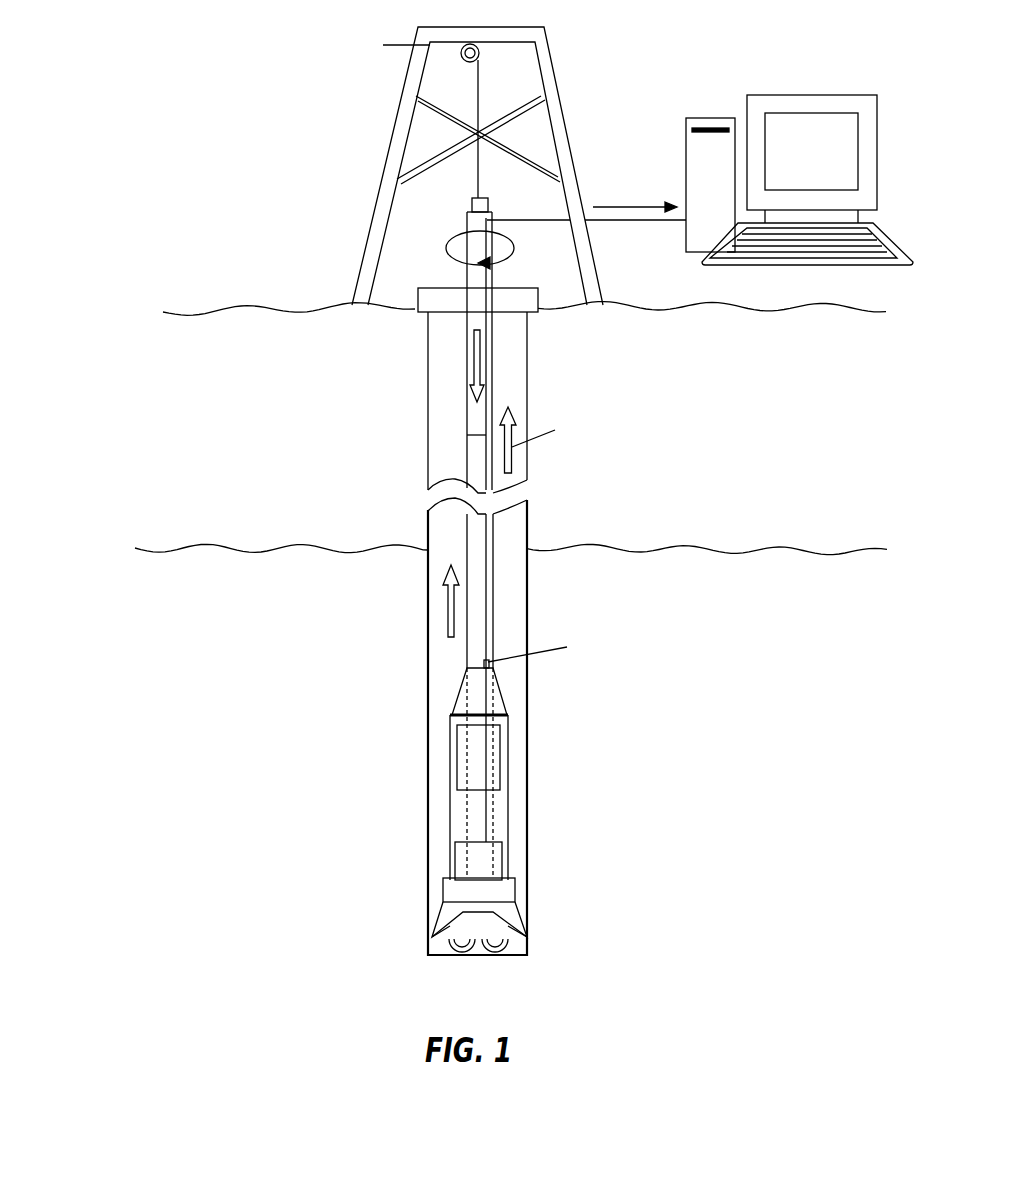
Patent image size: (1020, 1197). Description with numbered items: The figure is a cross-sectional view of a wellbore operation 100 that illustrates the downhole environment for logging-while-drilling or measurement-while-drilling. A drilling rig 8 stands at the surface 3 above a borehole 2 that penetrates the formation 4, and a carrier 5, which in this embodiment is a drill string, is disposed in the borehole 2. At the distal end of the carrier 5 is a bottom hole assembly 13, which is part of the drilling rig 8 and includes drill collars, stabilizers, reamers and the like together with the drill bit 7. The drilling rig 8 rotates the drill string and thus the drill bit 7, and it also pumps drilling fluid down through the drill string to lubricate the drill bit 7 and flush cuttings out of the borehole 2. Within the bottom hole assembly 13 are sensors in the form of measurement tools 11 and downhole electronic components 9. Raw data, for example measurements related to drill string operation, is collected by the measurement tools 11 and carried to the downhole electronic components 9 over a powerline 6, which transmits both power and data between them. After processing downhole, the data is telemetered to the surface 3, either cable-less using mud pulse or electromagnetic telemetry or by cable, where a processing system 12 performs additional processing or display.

The wellbore operation 100 is at (140, 82).
The drilling rig 8 is at (343, 242).
The surface 3 is at (488, 295).
The formation 4 is at (459, 587).
The carrier 5 is at (467, 537).
The borehole 2 is at (438, 452).
The processing system 12 is at (707, 122).
The powerline 6 is at (485, 800).
The downhole electronic components 9 is at (497, 775).
The measurement tools 11 is at (502, 848).
The bottom hole assembly 13 is at (515, 888).
The drill bit 7 is at (450, 910).